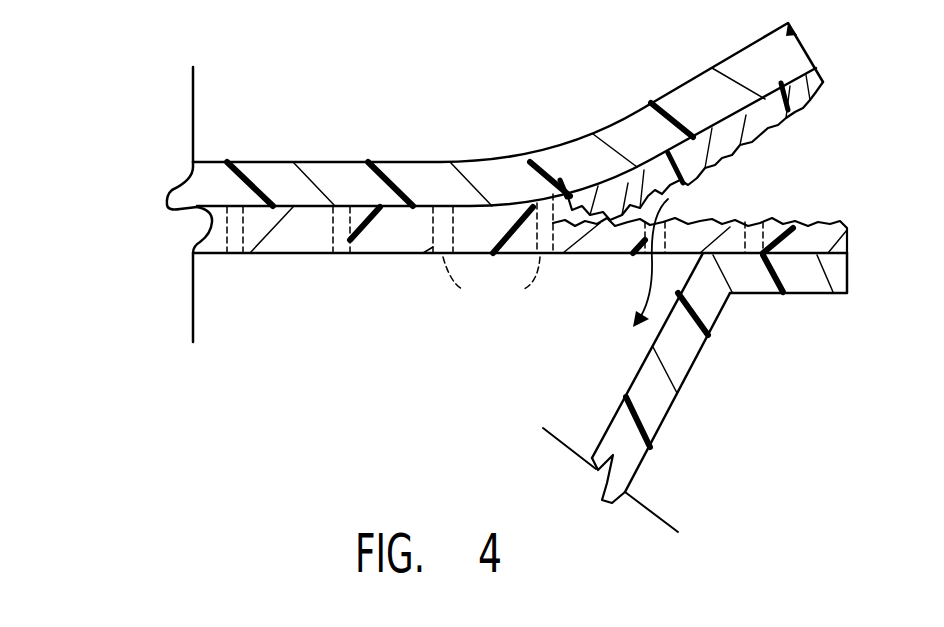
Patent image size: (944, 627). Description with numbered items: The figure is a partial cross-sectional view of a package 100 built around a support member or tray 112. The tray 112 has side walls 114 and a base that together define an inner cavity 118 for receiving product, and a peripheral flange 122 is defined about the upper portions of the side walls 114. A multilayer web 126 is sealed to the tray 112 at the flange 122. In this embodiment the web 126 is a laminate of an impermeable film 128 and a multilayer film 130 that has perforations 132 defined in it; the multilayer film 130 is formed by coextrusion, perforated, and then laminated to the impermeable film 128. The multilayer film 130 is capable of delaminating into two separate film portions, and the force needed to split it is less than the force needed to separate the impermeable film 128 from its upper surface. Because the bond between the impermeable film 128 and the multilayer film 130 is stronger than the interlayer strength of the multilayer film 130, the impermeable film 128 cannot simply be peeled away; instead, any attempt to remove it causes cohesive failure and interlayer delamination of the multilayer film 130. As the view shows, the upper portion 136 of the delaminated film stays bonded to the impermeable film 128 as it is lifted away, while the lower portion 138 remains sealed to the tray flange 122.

The package 100 is at (124, 167).
The support member or tray 112 is at (695, 392).
The side walls 114 is at (650, 447).
The inner cavity 118 is at (636, 392).
The peripheral flange 122 is at (823, 293).
The multilayer web 126 is at (538, 121).
The impermeable film 128 is at (512, 166).
The multilayer film 130 is at (551, 256).
The perforations 132 is at (491, 282).
The upper portion 136 is at (823, 82).
The lower portion 138 is at (830, 230).